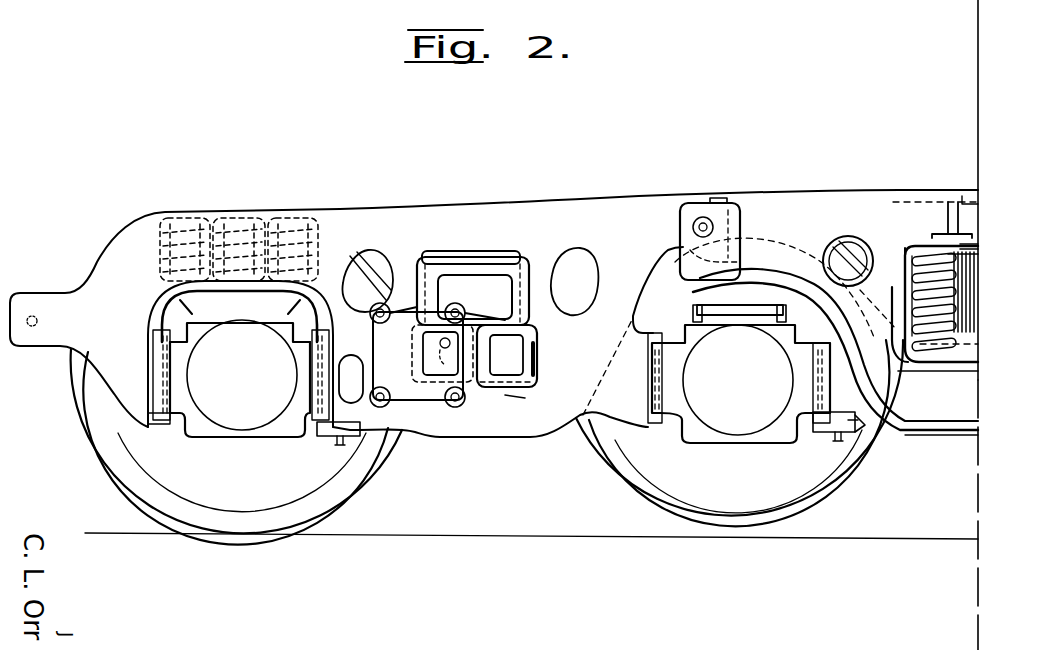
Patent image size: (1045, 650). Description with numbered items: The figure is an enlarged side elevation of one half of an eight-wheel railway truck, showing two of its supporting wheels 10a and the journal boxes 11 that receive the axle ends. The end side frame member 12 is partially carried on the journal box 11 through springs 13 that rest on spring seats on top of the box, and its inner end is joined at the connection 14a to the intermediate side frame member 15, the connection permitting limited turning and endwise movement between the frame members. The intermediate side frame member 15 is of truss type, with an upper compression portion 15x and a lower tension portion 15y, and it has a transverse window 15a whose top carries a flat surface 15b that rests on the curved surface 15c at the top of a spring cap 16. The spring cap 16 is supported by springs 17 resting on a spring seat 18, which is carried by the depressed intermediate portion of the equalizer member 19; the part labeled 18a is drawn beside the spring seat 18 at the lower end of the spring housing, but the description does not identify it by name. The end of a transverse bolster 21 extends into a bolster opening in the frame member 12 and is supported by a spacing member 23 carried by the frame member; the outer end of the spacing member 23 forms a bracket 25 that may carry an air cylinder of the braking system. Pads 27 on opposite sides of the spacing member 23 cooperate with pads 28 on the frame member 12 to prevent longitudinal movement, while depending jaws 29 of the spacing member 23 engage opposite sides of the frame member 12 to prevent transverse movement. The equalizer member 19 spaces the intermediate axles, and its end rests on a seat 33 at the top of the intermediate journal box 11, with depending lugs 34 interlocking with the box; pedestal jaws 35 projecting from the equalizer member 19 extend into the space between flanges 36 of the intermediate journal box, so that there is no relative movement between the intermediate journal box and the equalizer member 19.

The supporting wheels 10a is at (88, 378).
The journal boxes 11 is at (276, 433).
The end side frame members 12 is at (423, 210).
The springs 13 is at (188, 218).
The connection 14a is at (705, 215).
The intermediate side frame members 15 is at (934, 210).
The transverse window 15a is at (924, 256).
The flat surface 15b is at (974, 243).
The curved surface 15c is at (975, 255).
The upper compression portion 15x is at (967, 200).
The lower tension portion 15y is at (940, 495).
The spring cap 16 is at (927, 257).
The springs 17 is at (949, 322).
The spring seat 18 is at (978, 340).
The spring housing bracket 18a is at (921, 356).
The equalizer members 19 is at (710, 294).
The transverse bolsters 21 is at (505, 272).
The spacing members 23 is at (467, 372).
The bracket 25 is at (414, 398).
The pads 27 is at (526, 380).
The pads 28 is at (537, 348).
The depending jaws or flanges 29 is at (517, 398).
The seats 33 is at (758, 306).
The depending lugs or flanges 34 is at (781, 312).
The pedestal jaws 35 is at (862, 427).
The flanges 36 is at (822, 395).